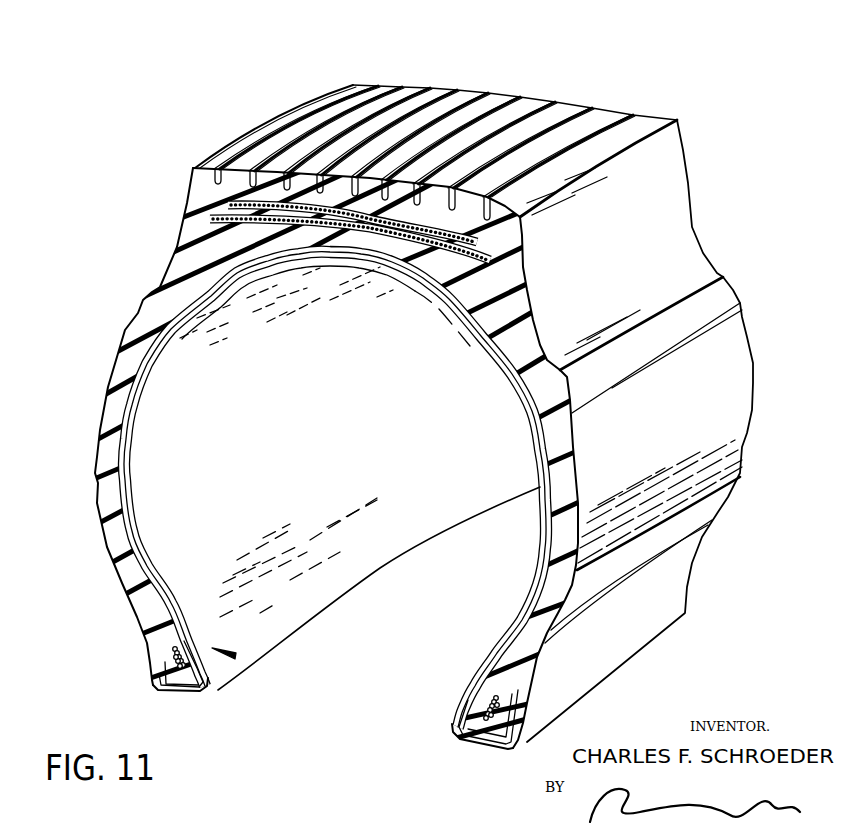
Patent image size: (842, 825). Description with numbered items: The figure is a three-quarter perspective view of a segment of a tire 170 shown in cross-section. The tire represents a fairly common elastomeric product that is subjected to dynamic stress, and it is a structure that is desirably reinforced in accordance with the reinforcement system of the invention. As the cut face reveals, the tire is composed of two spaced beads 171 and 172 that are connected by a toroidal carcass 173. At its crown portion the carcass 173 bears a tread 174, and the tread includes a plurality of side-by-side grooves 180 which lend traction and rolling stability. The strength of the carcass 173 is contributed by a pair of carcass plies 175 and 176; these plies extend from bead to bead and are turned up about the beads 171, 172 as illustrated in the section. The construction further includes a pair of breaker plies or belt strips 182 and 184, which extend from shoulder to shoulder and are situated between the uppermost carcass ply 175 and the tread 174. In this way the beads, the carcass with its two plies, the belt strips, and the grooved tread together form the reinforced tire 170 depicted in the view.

The tire 170 is at (100, 338).
The bead 171 is at (172, 706).
The bead 172 is at (482, 759).
The toroidal carcass 173 is at (484, 453).
The tread 174 is at (722, 137).
The carcass ply 175 is at (146, 347).
The carcass ply 176 is at (140, 400).
The grooves 180 is at (481, 96).
The breaker ply or belt strip 182 is at (304, 226).
The breaker ply or belt strip 184 is at (423, 236).